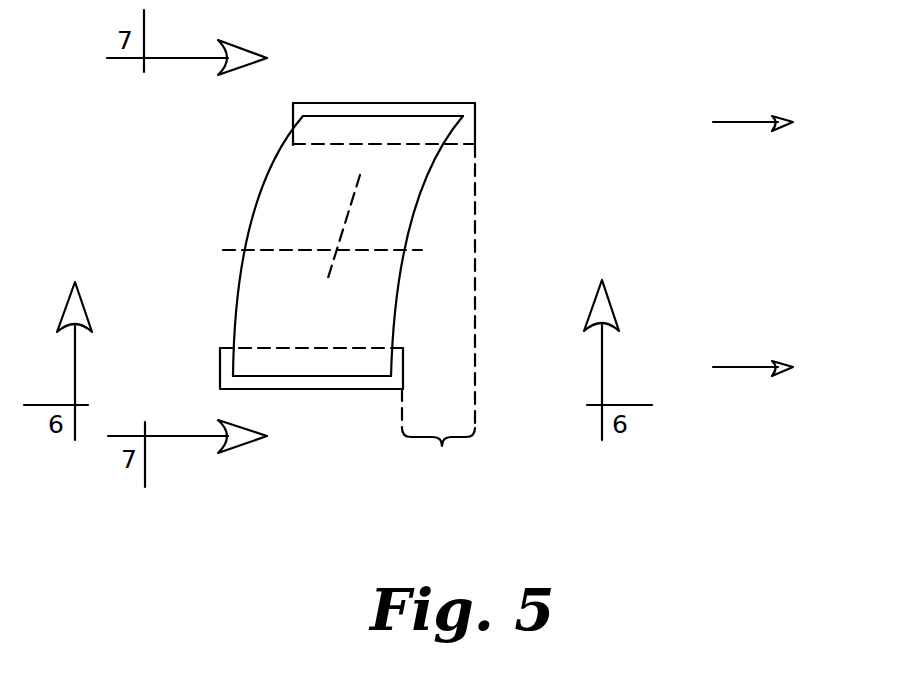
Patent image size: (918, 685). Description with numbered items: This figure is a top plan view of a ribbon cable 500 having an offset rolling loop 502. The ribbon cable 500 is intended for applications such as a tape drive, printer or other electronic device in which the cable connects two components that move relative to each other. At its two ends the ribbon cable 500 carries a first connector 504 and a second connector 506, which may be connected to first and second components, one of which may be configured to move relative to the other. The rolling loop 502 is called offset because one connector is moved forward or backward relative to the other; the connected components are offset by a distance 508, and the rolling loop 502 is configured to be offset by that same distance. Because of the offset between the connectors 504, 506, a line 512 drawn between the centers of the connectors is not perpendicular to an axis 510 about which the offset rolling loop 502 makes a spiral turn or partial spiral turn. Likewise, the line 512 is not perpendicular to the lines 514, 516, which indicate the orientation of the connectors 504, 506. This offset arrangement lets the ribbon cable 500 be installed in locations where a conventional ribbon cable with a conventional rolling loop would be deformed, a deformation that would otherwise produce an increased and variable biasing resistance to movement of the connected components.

The ribbon cable 500 is at (595, 67).
The offset rolling loop 502 is at (407, 225).
The first connector 504 is at (425, 103).
The second connector 506 is at (362, 390).
The distance 508 is at (438, 316).
The axis 510 is at (265, 247).
The line 512 is at (323, 293).
The line 514 is at (753, 122).
The line 516 is at (753, 367).